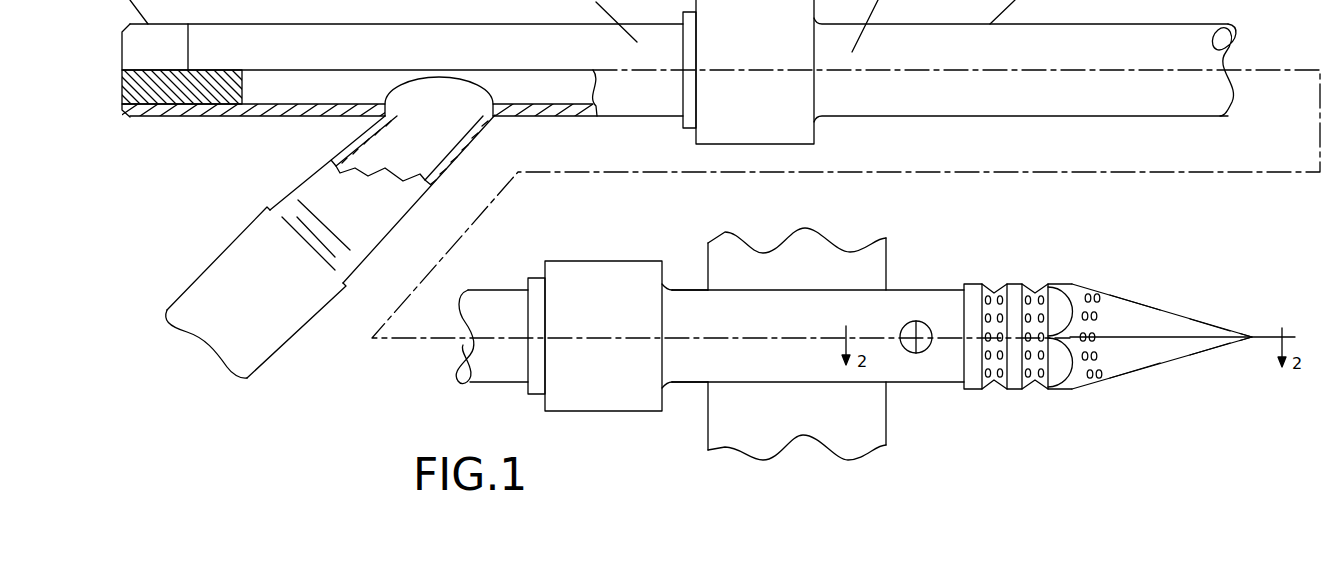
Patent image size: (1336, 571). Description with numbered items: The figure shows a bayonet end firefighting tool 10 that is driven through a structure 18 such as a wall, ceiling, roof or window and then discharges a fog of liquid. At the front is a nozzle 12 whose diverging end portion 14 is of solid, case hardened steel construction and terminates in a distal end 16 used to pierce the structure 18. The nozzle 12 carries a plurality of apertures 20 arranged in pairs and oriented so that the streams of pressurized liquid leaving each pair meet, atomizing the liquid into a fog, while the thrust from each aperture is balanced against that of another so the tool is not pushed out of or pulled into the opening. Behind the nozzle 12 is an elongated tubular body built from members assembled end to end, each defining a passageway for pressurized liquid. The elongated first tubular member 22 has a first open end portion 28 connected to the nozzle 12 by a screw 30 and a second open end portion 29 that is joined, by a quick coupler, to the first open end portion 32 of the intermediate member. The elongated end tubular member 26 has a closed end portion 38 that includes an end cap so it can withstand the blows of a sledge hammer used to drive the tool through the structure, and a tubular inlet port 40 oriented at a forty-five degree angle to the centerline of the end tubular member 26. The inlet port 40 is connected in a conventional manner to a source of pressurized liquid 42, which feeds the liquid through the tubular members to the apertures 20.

The bayonet end firefighting tool 10 is at (1218, 258).
The nozzle 12 is at (1125, 388).
The diverging end portion 14 is at (1150, 305).
The distal end 16 is at (1252, 337).
The structure 18 is at (888, 250).
The apertures 20 is at (990, 238).
The first tubular member 22 is at (692, 383).
The end tubular member 26 is at (245, 117).
The first open end portion 28 is at (760, 144).
The second open end portion 29 is at (680, 313).
The screw 30 is at (925, 347).
The first open end portion 32 is at (488, 313).
The closed end portion 38 is at (120, 94).
The tubular inlet port 40 is at (397, 220).
The source of pressurized liquid 42 is at (278, 350).